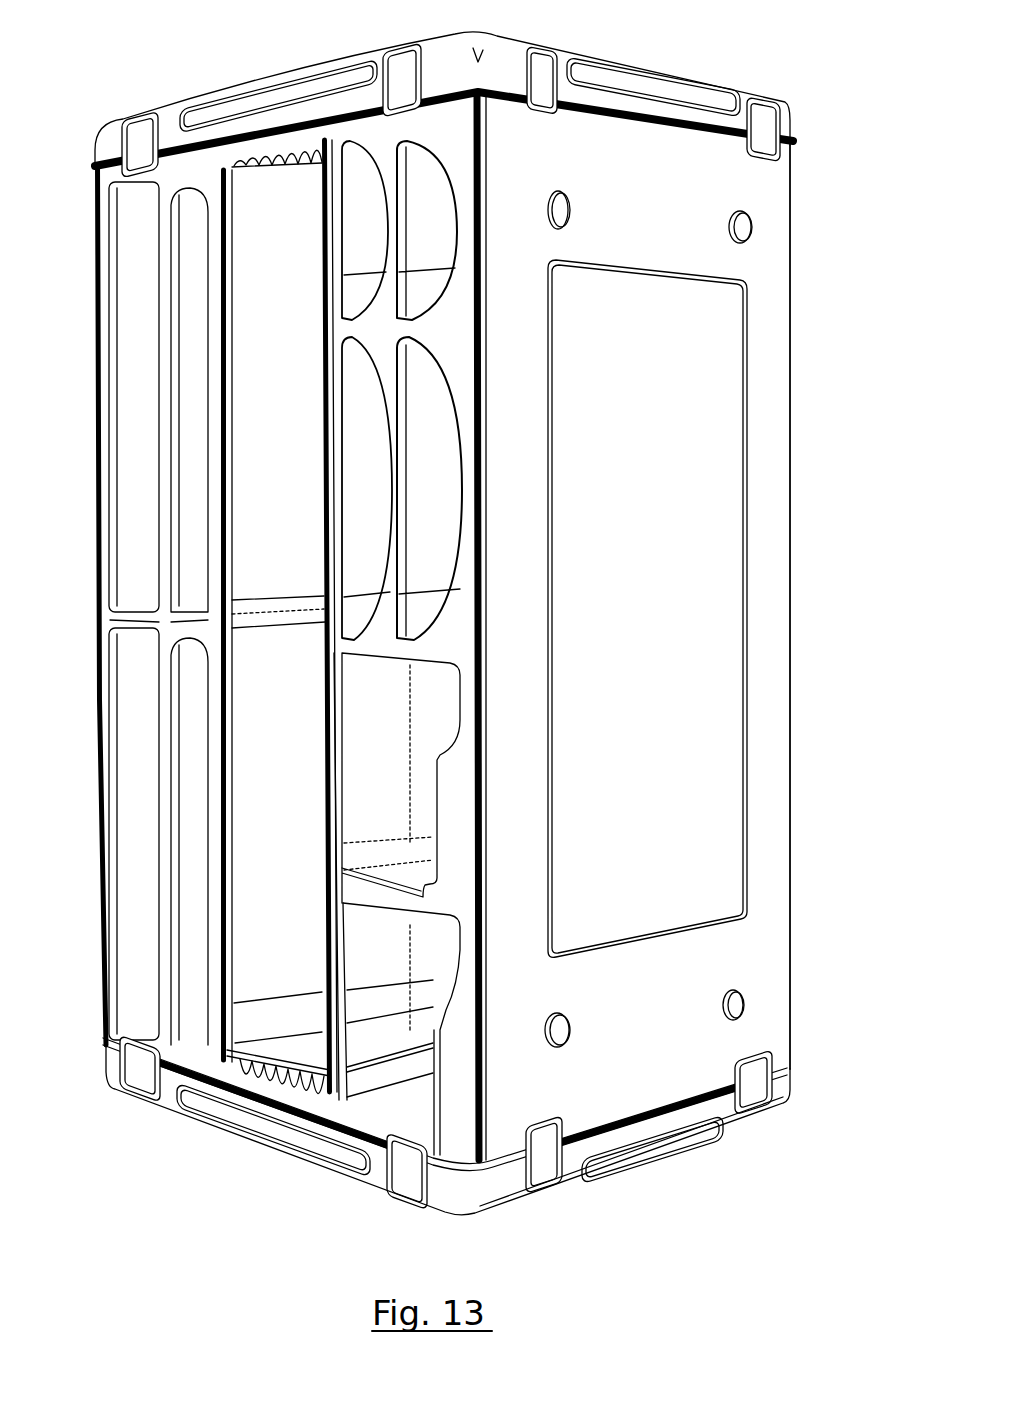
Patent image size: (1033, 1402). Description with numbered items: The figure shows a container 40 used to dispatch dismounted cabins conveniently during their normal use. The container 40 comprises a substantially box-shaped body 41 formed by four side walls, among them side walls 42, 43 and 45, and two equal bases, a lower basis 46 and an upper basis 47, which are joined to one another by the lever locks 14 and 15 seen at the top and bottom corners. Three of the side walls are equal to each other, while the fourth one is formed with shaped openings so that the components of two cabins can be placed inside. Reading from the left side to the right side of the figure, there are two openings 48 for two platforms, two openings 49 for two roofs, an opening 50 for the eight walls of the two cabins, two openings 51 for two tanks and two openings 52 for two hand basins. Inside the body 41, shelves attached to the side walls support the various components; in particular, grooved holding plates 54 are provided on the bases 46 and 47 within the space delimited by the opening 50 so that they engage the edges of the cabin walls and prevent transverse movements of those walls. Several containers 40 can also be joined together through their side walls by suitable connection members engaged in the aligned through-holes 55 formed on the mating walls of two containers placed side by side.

The lever lock 14 is at (142, 1077).
The lever lock 15 is at (143, 130).
The container 40 is at (836, 407).
The box-shaped body 41 is at (792, 598).
The side wall 42 is at (137, 430).
The side wall 43 is at (438, 965).
The side wall 45 is at (460, 1092).
The lower basis 46 is at (660, 1150).
The upper basis 47 is at (655, 83).
The openings for platforms 48 is at (130, 650).
The openings for roofs 49 is at (190, 215).
The opening for walls 50 is at (270, 195).
The openings for tanks 51 is at (353, 920).
The openings for hand basins 52 is at (436, 498).
The grooved holding plates 54 is at (305, 165).
The through-holes 55 is at (752, 224).